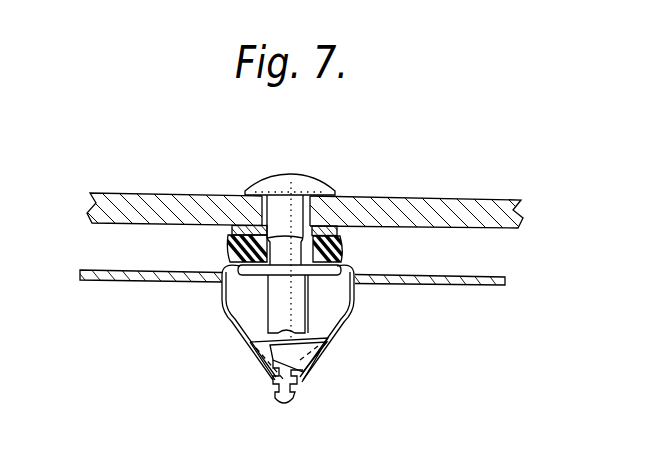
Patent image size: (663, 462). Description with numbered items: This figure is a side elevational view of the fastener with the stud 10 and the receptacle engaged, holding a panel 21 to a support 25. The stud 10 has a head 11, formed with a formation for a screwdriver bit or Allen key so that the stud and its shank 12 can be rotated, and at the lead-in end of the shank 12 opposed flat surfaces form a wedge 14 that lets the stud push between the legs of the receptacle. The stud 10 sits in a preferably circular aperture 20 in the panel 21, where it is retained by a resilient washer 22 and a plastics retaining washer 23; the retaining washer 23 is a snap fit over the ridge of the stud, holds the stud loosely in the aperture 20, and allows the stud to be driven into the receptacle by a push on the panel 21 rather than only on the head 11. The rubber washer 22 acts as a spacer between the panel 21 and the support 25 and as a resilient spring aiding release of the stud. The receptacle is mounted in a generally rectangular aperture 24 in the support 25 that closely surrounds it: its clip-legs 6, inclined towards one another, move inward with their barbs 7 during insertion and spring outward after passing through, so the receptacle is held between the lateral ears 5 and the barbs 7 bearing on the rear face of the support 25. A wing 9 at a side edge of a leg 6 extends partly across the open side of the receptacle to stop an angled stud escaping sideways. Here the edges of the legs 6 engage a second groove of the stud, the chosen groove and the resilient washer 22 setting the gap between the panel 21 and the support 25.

The lateral ears 5 is at (307, 206).
The clip-legs 6 is at (344, 340).
The barb 7 is at (216, 293).
The wing 9 is at (314, 340).
The stud 10 is at (347, 185).
The head 11 is at (308, 185).
The shank 12 is at (272, 316).
The wedge 14 is at (284, 399).
The aperture 20 is at (268, 194).
The panel 21 is at (497, 213).
The resilient washer 22 is at (377, 206).
The retaining washer 23 is at (262, 225).
The aperture 24 is at (346, 268).
The support 25 is at (505, 285).